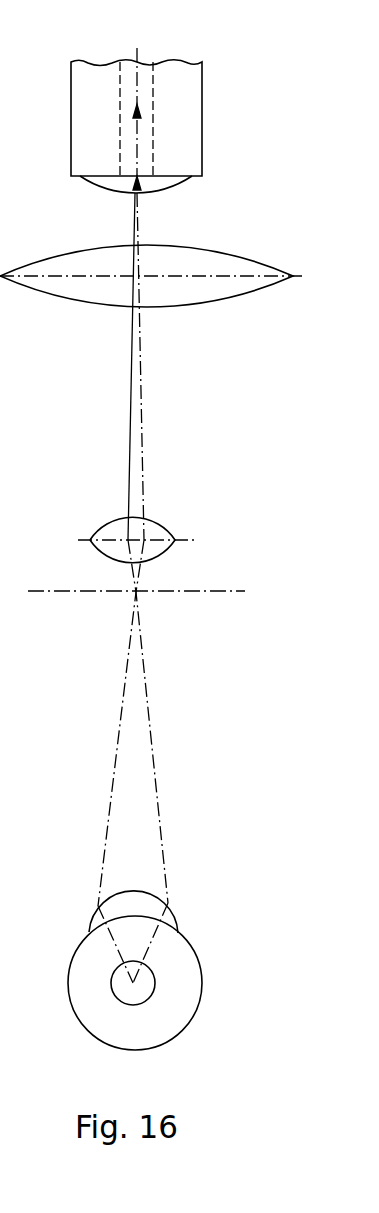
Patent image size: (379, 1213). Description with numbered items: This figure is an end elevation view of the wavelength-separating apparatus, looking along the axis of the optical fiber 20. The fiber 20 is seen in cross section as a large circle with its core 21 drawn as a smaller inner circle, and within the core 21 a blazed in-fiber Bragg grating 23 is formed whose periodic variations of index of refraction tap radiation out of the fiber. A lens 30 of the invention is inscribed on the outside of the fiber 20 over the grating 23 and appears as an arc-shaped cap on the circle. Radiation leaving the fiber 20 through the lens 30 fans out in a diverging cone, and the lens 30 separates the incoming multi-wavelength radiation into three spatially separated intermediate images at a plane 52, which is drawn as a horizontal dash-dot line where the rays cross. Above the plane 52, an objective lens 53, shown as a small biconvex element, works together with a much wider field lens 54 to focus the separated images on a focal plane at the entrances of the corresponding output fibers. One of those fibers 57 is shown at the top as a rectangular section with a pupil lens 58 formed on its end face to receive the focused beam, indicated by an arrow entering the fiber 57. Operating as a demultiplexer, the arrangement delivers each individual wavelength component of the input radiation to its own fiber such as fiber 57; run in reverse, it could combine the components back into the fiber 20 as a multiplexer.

The core 21 is at (128, 76).
The fiber 57 is at (173, 102).
The pupil lens 58 is at (167, 182).
The field lens 54 is at (213, 285).
The objective lens 53 is at (152, 532).
The plane 52 is at (41, 594).
The lens 30 is at (167, 922).
The in-fiber Bragg grating 23 is at (135, 993).
The optical fiber 20 is at (189, 1023).